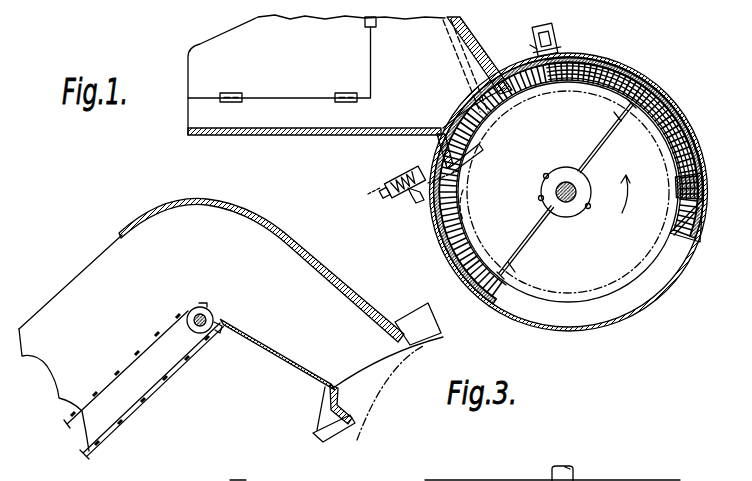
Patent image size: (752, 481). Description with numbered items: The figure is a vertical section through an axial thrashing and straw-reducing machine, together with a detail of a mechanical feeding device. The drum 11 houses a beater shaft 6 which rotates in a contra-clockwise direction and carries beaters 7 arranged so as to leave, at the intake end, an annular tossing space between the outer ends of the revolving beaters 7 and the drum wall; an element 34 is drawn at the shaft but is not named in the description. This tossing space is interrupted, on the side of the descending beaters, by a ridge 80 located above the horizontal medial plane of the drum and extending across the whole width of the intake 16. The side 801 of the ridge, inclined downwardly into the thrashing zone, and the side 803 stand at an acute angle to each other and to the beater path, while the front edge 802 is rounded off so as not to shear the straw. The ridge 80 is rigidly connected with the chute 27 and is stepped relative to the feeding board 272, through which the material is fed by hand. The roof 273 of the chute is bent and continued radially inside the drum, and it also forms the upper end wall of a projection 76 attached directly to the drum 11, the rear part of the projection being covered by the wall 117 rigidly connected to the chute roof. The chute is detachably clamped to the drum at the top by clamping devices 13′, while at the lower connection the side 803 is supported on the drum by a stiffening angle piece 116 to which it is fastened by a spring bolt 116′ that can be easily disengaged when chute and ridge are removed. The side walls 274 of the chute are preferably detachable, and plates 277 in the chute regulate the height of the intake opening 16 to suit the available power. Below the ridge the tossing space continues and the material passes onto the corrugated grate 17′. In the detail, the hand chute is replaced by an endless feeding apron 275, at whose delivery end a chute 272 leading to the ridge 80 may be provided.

In FIG. 1, the chute 27 is at (287, 121).
In FIG. 1, the feeding board 272 is at (337, 134).
In FIG. 1, the roof of the chute 273 is at (467, 36).
In FIG. 1, the side walls 274 is at (220, 54).
In FIG. 1, the endless feeding apron 275 is at (130, 362).
In FIG. 1, the plates 277 is at (456, 50).
In FIG. 1, the intake 16 is at (447, 126).
In FIG. 1, the drum 11 is at (701, 148).
In FIG. 1, the stiffening angle piece 116 is at (420, 198).
In FIG. 1, the spring bolt 116′ is at (377, 190).
In FIG. 1, the wall 117 is at (526, 35).
In FIG. 1, the projection 76 is at (625, 70).
In FIG. 3, the projection 76 is at (634, 480).
In FIG. 1, the corrugated grate 17′ is at (637, 281).
In FIG. 1, the beaters 7 is at (601, 138).
In FIG. 1, the hub flange 34 is at (547, 212).
In FIG. 1, the beater shaft 6 is at (570, 185).
In FIG. 1, the clamping devices 13′ is at (554, 34).
In FIG. 3, the clamping devices 13′ is at (589, 480).
In FIG. 1, the ridge 80 is at (457, 176).
In FIG. 3, the ridge 80 is at (440, 480).
In FIG. 1, the side of the ridge 801 is at (467, 152).
In FIG. 1, the front edge of the ridge 802 is at (470, 163).
In FIG. 1, the side of the ridge 803 is at (460, 210).